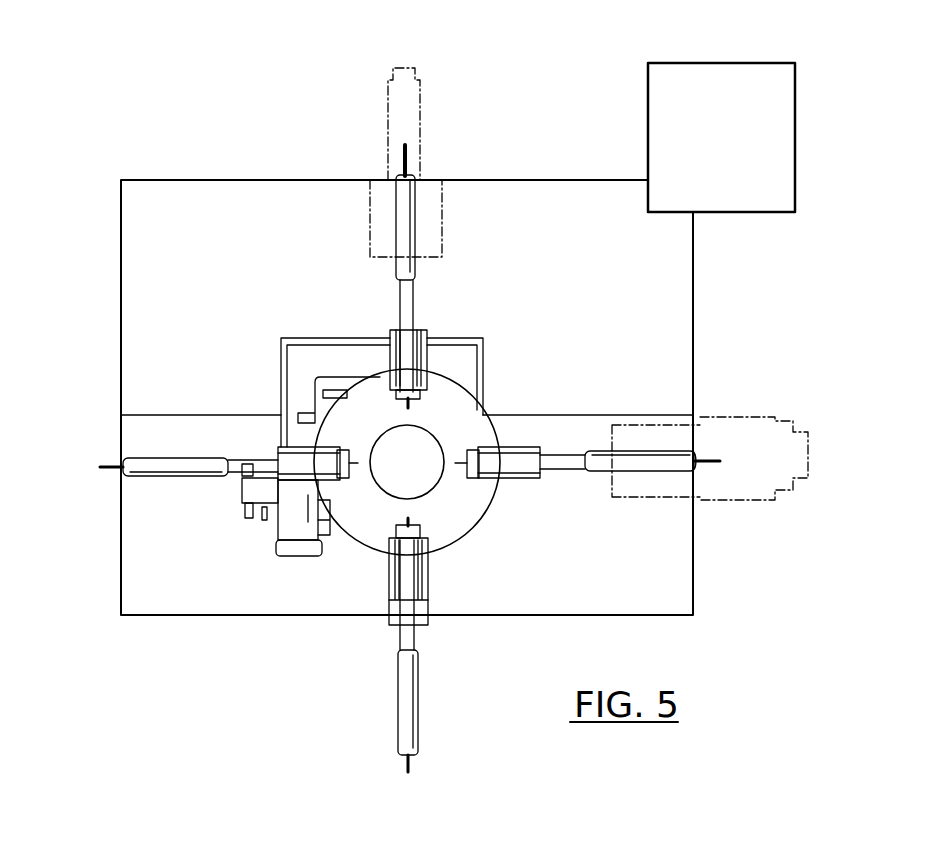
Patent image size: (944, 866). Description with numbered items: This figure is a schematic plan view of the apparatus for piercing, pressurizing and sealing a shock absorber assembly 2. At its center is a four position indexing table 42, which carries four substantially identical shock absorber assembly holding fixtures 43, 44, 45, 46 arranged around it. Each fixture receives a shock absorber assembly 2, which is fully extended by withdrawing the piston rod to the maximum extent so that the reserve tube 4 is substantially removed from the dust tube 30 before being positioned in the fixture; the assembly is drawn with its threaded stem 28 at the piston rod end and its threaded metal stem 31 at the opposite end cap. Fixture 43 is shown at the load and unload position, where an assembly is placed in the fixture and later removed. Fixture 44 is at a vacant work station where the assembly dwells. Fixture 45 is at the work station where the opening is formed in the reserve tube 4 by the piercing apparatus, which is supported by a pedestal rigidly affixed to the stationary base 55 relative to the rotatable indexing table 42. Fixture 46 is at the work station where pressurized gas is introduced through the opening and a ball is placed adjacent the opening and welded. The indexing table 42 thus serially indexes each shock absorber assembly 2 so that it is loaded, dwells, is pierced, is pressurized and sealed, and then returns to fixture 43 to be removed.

The shock absorber assembly 2 is at (415, 235).
The reserve tube 4 is at (415, 293).
The threaded stem 28 is at (410, 156).
The dust tube 30 is at (417, 205).
The threaded metal stem 31 is at (440, 397).
The indexing table 42 is at (477, 417).
The holding fixture 43 is at (432, 601).
The holding fixture 44 is at (283, 450).
The holding fixture 45 is at (423, 332).
The holding fixture 46 is at (530, 440).
The stationary base 55 is at (693, 300).